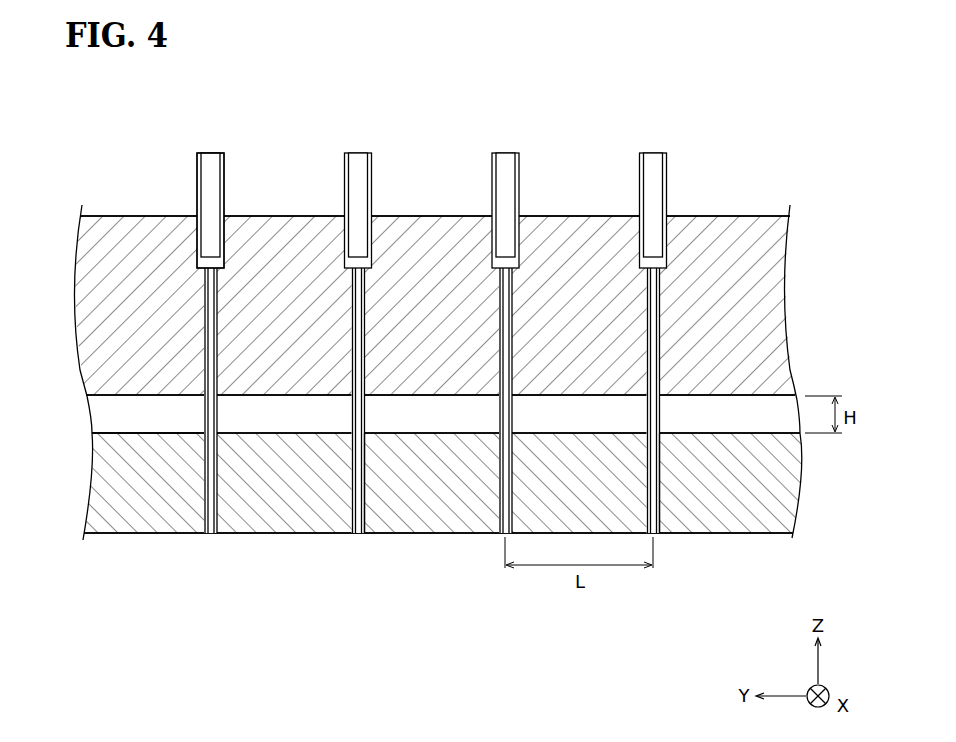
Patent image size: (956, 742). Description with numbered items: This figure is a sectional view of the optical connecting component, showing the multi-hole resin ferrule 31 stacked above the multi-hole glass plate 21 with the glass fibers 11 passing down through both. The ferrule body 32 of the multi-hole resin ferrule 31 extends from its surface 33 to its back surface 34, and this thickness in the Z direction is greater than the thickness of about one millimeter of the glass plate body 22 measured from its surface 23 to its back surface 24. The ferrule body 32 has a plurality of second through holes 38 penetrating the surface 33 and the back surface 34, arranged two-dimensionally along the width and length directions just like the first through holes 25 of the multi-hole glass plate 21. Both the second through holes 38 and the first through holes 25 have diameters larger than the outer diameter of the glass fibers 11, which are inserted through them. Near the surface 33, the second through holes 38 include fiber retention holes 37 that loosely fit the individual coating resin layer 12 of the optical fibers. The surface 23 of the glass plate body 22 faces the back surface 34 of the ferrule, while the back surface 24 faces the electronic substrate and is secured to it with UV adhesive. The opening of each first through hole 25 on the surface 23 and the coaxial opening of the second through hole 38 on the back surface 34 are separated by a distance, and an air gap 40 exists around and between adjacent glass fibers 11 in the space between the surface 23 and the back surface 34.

The glass fibers 11 is at (648, 297).
The individual coating resin layer 12 is at (211, 160).
The multi-hole glass plate 21 is at (107, 538).
The glass plate body 22 is at (118, 482).
The surface 23 is at (151, 436).
The back surface 24 is at (274, 535).
The first through holes 25 is at (364, 472).
The multi-hole resin ferrule 31 is at (103, 212).
The ferrule body 32 is at (110, 298).
The surface 33 is at (297, 214).
The back surface 34 is at (110, 396).
The fiber retention holes 37 is at (197, 240).
The second through holes 38 is at (503, 320).
The air gap 40 is at (310, 418).